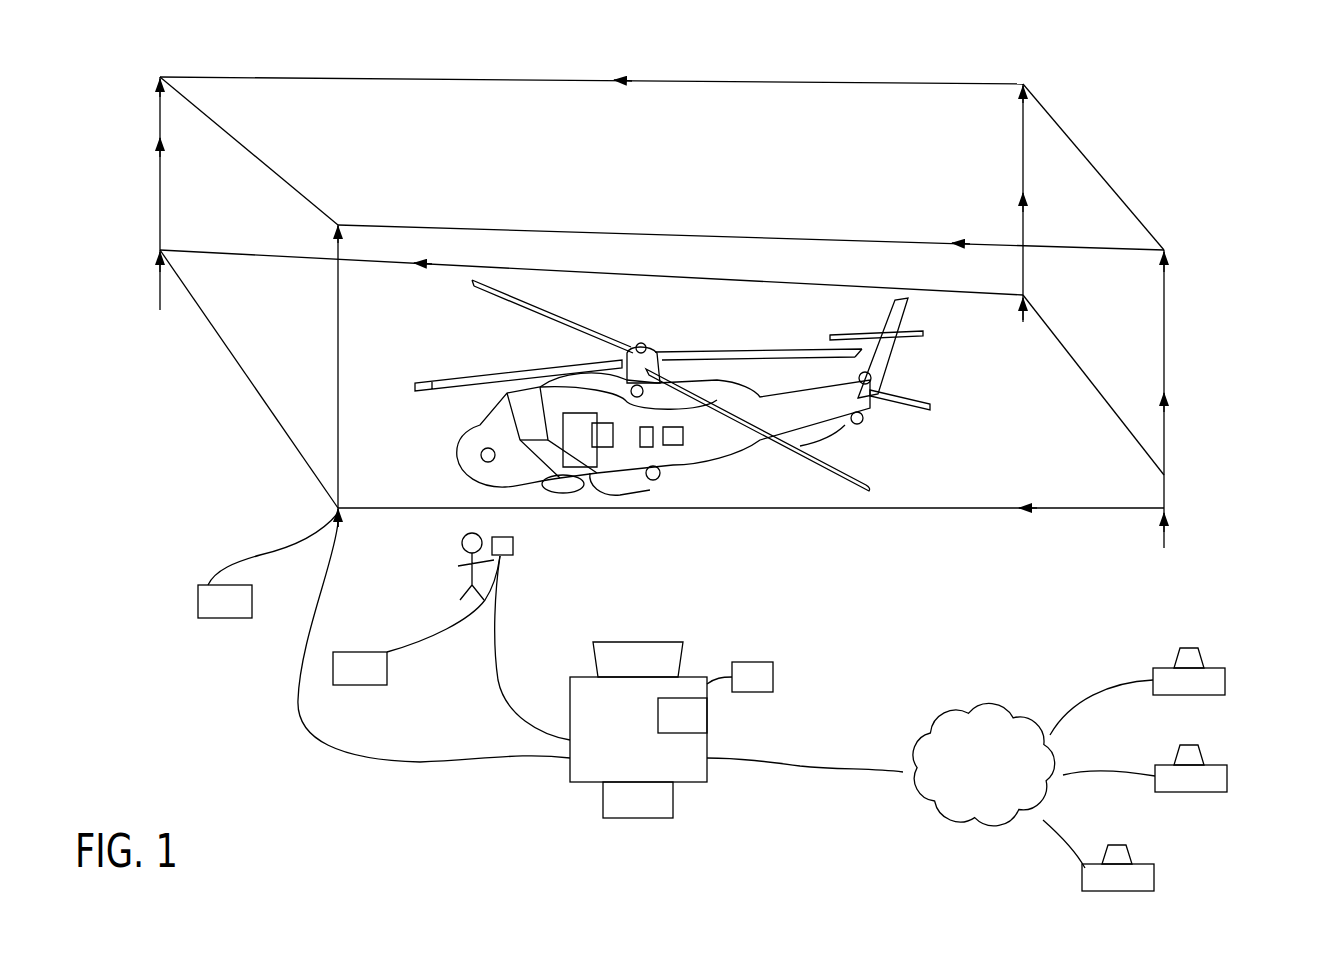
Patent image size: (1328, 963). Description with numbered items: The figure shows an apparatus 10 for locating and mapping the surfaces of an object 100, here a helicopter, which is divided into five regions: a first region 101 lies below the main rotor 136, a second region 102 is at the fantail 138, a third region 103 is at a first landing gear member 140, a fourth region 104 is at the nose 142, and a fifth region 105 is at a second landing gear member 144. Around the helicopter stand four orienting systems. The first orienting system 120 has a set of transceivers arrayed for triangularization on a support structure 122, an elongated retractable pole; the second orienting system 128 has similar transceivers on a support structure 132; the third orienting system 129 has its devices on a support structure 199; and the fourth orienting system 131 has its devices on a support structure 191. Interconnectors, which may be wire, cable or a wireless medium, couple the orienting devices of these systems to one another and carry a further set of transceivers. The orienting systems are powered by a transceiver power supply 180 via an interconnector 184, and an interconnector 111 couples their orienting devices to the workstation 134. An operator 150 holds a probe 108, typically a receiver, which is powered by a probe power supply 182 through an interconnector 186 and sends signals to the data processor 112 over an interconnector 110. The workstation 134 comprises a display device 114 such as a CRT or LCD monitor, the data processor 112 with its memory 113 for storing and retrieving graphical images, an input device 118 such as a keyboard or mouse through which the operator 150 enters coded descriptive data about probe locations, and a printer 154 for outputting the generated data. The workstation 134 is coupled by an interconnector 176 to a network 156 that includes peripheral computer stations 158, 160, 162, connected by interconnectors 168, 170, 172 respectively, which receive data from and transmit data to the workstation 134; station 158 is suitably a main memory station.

The apparatus 10 is at (424, 60).
The object 100 is at (485, 360).
The region 1 101 is at (680, 357).
The region 2 102 is at (880, 378).
The region 3 103 is at (690, 484).
The region 4 104 is at (486, 448).
The region 5 105 is at (868, 420).
The probe 108 is at (545, 530).
The interconnector 110 is at (498, 642).
The interconnector 111 is at (333, 565).
The data processor 112 is at (604, 769).
The memory 113 is at (697, 715).
The display device 114 is at (683, 656).
The input device 118 is at (660, 818).
The first orienting system 120 is at (147, 106).
The support structure 122 is at (158, 212).
The second orienting system 128 is at (1185, 330).
The third orienting system 129 is at (1010, 146).
The fourth orienting system 131 is at (348, 410).
The support structure 132 is at (1166, 457).
The workstation 134 is at (666, 640).
The main rotor 136 is at (645, 346).
The fantail 138 is at (893, 340).
The first landing gear member 140 is at (638, 480).
The nose 142 is at (462, 458).
The second landing gear member 144 is at (850, 428).
The operator 150 is at (466, 565).
The printer 154 is at (773, 680).
The network 156 is at (970, 758).
The peripheral computer station 158 is at (1225, 680).
The peripheral computer station 160 is at (1227, 778).
The peripheral computer station 162 is at (1154, 878).
The interconnector 168 is at (1092, 696).
The interconnector 170 is at (1093, 769).
The interconnector 172 is at (1060, 832).
The interconnector 176 is at (770, 760).
The transceiver power supply 180 is at (236, 618).
The probe power supply 182 is at (387, 678).
The interconnector 184 is at (283, 552).
The interconnector 186 is at (435, 628).
The support structure 191 is at (340, 430).
The support structure 199 is at (1021, 167).